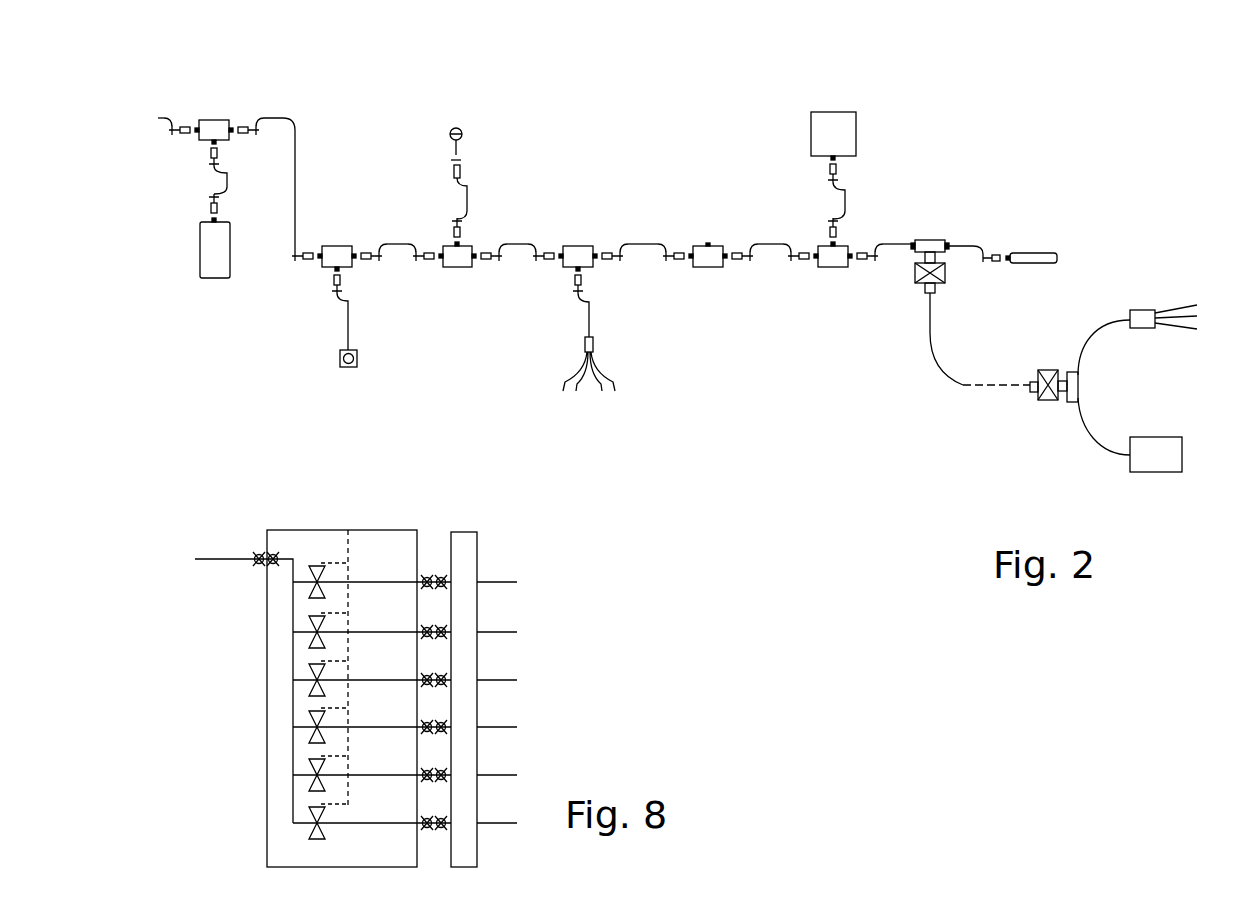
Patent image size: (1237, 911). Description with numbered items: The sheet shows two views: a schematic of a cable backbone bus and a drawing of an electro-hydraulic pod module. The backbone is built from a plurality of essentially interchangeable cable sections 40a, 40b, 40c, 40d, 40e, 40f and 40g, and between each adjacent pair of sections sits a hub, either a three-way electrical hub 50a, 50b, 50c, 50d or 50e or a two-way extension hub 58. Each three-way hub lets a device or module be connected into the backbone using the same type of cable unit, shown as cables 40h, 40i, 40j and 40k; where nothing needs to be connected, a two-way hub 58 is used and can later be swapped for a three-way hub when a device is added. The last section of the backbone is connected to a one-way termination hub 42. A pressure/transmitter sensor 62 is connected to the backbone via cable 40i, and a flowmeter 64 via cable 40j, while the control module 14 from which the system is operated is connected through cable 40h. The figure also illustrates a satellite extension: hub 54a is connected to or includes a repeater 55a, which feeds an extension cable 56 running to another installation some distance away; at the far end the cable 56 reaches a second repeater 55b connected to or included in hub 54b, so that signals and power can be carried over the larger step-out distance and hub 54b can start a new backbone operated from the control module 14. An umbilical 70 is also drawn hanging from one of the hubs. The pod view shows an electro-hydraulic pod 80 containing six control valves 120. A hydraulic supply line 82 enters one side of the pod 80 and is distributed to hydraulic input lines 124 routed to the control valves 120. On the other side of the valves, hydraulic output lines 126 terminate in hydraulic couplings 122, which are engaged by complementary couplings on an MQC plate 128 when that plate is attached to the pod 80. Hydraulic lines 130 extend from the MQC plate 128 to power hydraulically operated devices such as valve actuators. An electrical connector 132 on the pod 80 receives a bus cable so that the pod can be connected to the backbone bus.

In FIG. 2, the control module 14 is at (219, 257).
In FIG. 2, the cable section 40a is at (303, 157).
In FIG. 2, the cable section 40b is at (393, 238).
In FIG. 2, the cable section 40c is at (529, 240).
In FIG. 2, the cable section 40d is at (648, 240).
In FIG. 2, the cable section 40e is at (768, 240).
In FIG. 2, the cable section 40f is at (893, 240).
In FIG. 2, the cable section 40g is at (978, 240).
In FIG. 2, the cable unit 40h is at (228, 175).
In FIG. 2, the cable unit 40i is at (347, 313).
In FIG. 2, the cable unit 40j is at (467, 197).
In FIG. 2, the cable unit 40k is at (848, 202).
In FIG. 2, the termination hub 42 is at (1040, 260).
In FIG. 2, the three-way electrical hub 50a is at (212, 118).
In FIG. 2, the three-way electrical hub 50b is at (320, 268).
In FIG. 2, the three-way electrical hub 50c is at (448, 270).
In FIG. 2, the three-way electrical hub 50d is at (585, 270).
In FIG. 2, the three-way electrical hub 50e is at (832, 270).
In FIG. 2, the hub 54a is at (940, 240).
In FIG. 2, the hub 54b is at (1067, 402).
In FIG. 2, the repeater 55a is at (920, 283).
In FIG. 2, the repeater 55b is at (1040, 398).
In FIG. 2, the extension cable 56 is at (930, 360).
In FIG. 2, the two-way extension hub 58 is at (713, 270).
In FIG. 2, the pressure/transmitter sensor 62 is at (340, 357).
In FIG. 2, the flowmeter 64 is at (449, 133).
In FIG. 2, the umbilical 70 is at (589, 321).
In FIG. 2, the electro-hydraulic pod 80 is at (815, 130).
In FIG. 8, the electro-hydraulic pod 80 is at (527, 541).
In FIG. 8, the hydraulic supply line 82 is at (230, 562).
In FIG. 8, the control valve 120 is at (293, 712).
In FIG. 8, the hydraulic coupling 122 is at (447, 628).
In FIG. 8, the hydraulic input line 124 is at (293, 651).
In FIG. 8, the hydraulic output line 126 is at (378, 630).
In FIG. 8, the MQC plate 128 is at (468, 652).
In FIG. 8, the hydraulic line 130 is at (503, 732).
In FIG. 8, the electrical connector 132 is at (350, 522).